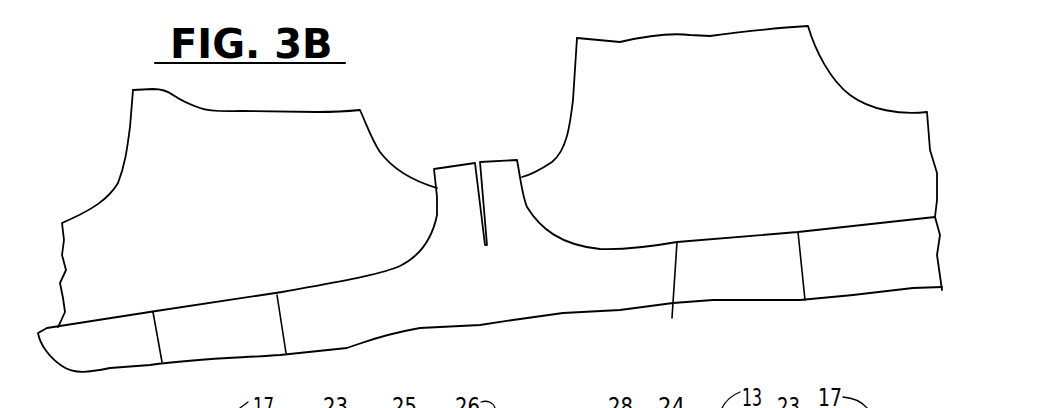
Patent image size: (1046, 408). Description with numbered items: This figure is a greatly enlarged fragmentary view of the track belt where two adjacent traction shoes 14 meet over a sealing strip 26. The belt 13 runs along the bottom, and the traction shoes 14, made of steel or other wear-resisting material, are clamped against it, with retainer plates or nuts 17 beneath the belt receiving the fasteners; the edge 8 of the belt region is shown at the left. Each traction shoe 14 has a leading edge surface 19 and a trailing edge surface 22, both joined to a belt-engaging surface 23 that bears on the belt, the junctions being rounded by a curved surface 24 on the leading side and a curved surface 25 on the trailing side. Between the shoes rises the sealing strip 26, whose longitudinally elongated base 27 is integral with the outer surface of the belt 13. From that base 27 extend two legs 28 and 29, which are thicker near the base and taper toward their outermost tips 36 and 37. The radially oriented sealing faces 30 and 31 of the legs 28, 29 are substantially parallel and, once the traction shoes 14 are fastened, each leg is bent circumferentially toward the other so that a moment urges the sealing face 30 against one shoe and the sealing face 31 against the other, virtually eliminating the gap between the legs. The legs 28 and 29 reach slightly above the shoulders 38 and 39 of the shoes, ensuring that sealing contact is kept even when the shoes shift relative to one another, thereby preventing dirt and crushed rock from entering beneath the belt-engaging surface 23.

The edge of base 8 is at (47, 328).
The belt 13 is at (715, 287).
The traction shoes 14 is at (138, 127).
The retainer plates or nuts 17 is at (131, 340).
The leading edge surface 19 is at (437, 208).
The trailing edge surface 22 is at (523, 192).
The belt-engaging surface 23 is at (418, 314).
The curved surface 24 is at (427, 247).
The curved surface 25 is at (545, 230).
The sealing strip 26 is at (485, 265).
The base 27 is at (405, 320).
The first leg 28 is at (460, 228).
The second leg 29 is at (510, 222).
The sealing face 30 is at (437, 213).
The sealing face 31 is at (523, 182).
The outermost tip 36 is at (445, 166).
The outermost tip 37 is at (487, 162).
The shoulder 38 is at (437, 190).
The shoulder 39 is at (522, 173).